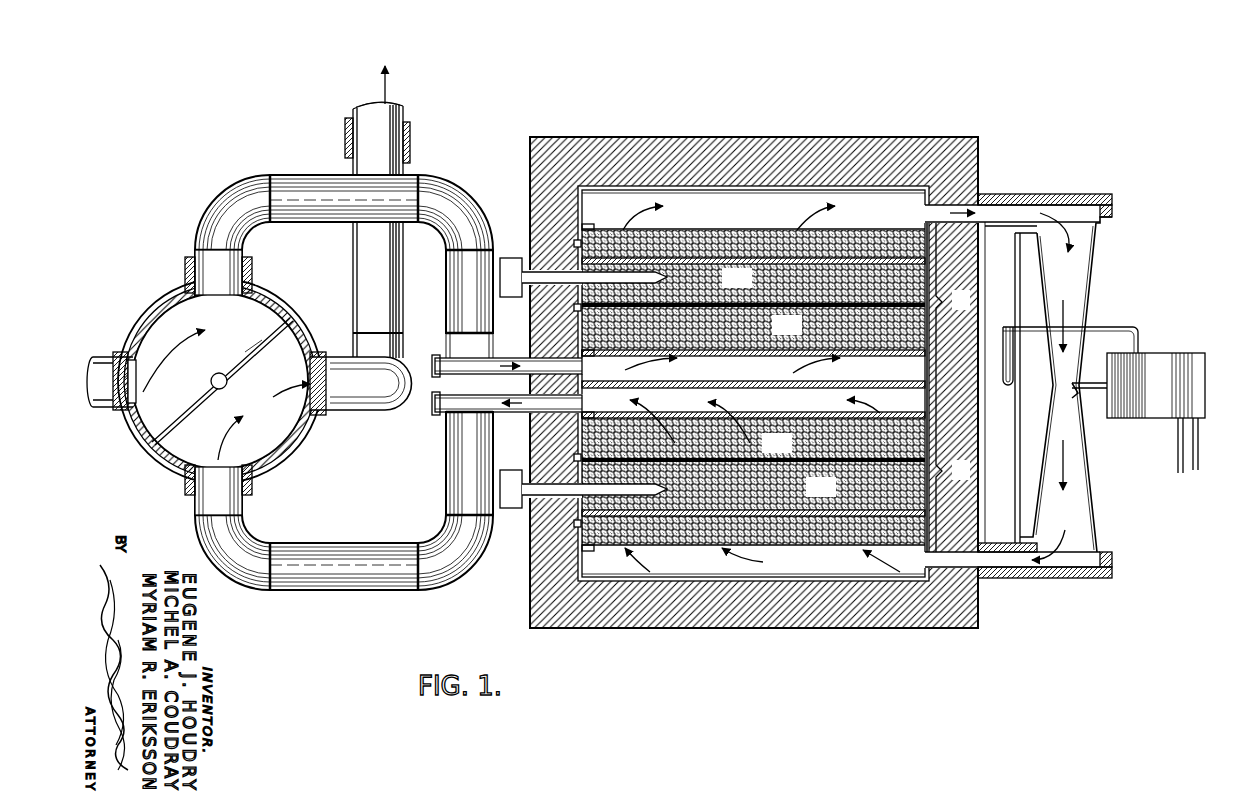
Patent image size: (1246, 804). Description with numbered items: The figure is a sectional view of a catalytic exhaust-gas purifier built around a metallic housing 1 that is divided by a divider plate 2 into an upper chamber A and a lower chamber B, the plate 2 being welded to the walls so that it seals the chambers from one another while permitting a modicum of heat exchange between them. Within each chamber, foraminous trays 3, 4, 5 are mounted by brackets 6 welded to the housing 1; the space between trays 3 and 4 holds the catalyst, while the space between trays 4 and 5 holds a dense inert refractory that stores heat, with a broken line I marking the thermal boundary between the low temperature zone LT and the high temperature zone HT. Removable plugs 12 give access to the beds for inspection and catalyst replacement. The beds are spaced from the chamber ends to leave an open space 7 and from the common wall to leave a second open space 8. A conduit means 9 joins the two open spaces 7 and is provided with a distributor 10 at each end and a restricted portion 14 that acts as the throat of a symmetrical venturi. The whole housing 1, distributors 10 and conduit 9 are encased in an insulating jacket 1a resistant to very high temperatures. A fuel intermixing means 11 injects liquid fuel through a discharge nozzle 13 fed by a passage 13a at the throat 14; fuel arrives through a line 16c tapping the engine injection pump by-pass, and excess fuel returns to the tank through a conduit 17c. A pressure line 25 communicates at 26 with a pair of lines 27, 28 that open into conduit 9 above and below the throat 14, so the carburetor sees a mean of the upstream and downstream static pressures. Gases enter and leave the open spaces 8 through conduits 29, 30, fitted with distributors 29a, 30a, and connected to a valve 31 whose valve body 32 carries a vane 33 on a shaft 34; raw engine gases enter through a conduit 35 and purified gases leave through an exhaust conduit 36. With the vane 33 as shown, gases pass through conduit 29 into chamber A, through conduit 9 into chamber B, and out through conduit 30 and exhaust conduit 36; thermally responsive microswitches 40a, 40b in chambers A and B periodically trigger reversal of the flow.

The metallic housing 1 is at (660, 190).
The insulating jacket 1a is at (978, 140).
The divider plate 2 is at (730, 381).
The foraminous tray 3 is at (852, 242).
The foraminous tray 4 is at (872, 250).
The foraminous tray 5 is at (858, 348).
The brackets 6 is at (586, 230).
The open space 7 is at (753, 383).
The second open space 8 is at (752, 398).
The conduit means 9 is at (1092, 256).
The distributor 10 is at (1078, 200).
The fuel intermixing means 11 is at (1192, 345).
The removable plugs 12 is at (574, 308).
The discharge nozzle 13 is at (1074, 398).
The passage 13a is at (1092, 395).
The restricted portion 14 is at (1052, 383).
The fuel line 16c is at (1178, 452).
The conduit 17c is at (1198, 446).
The pressure line 25 is at (1125, 327).
The junction 26 is at (1012, 385).
The line 27 is at (1015, 285).
The line 28 is at (1015, 472).
The conduit 29 is at (447, 178).
The distributor 29a is at (442, 374).
The conduit 30 is at (428, 590).
The distributor 30a is at (445, 412).
The valve 31 is at (130, 295).
The valve body 32 is at (275, 310).
The vane 33 is at (242, 363).
The shaft 34 is at (225, 388).
The conduit 35 is at (102, 410).
The exhaust conduit 36 is at (358, 410).
The thermally responsive microswitch 40a is at (510, 258).
The thermally responsive microswitch 40b is at (510, 508).